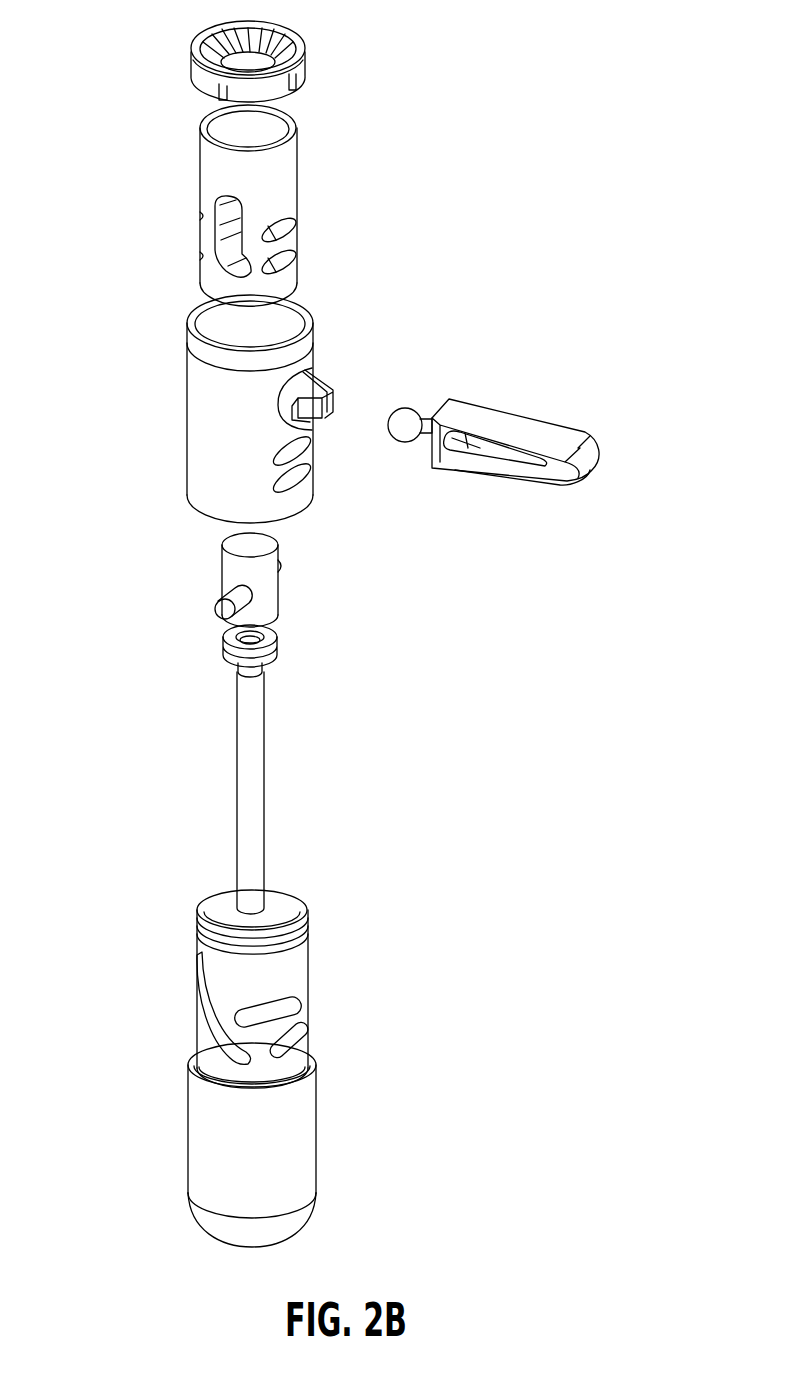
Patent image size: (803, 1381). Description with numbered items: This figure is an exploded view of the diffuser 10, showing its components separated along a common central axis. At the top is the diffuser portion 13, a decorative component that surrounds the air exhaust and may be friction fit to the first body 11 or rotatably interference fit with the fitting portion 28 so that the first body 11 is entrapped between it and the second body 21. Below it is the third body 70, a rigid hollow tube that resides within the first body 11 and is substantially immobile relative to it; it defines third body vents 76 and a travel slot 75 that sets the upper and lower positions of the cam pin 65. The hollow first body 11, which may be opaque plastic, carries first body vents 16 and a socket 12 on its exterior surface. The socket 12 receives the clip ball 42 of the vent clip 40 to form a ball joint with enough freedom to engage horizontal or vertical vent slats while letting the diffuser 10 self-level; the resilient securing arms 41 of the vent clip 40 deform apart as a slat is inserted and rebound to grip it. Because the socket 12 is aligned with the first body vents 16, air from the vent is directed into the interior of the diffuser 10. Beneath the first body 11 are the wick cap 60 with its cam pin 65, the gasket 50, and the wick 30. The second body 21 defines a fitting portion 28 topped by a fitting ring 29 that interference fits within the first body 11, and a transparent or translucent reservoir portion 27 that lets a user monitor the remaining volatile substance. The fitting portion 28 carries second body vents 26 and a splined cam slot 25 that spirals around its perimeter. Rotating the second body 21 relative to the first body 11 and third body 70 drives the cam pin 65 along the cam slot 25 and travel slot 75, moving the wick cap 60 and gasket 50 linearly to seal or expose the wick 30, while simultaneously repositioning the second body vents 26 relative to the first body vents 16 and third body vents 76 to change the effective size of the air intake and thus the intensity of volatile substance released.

The diffuser 10 is at (122, 84).
The diffuser portion 13 is at (305, 46).
The third body 70 is at (218, 166).
The travel slot 75 is at (215, 250).
The third body vents 76 is at (314, 222).
The first body 11 is at (205, 445).
The socket 12 is at (318, 425).
The first body vents 16 is at (320, 474).
The vent clip 40 is at (572, 512).
The securing arms 41 is at (558, 446).
The clip ball 42 is at (400, 410).
The wick cap 60 is at (232, 570).
The cam pin 65 is at (222, 612).
The gasket 50 is at (268, 657).
The wick 30 is at (255, 742).
The fitting portion 28 is at (344, 898).
The fitting ring 29 is at (228, 890).
The second body vents 26 is at (250, 1000).
The cam slot 25 is at (205, 1025).
The reservoir portion 27 is at (143, 1058).
The second body 21 is at (388, 1190).